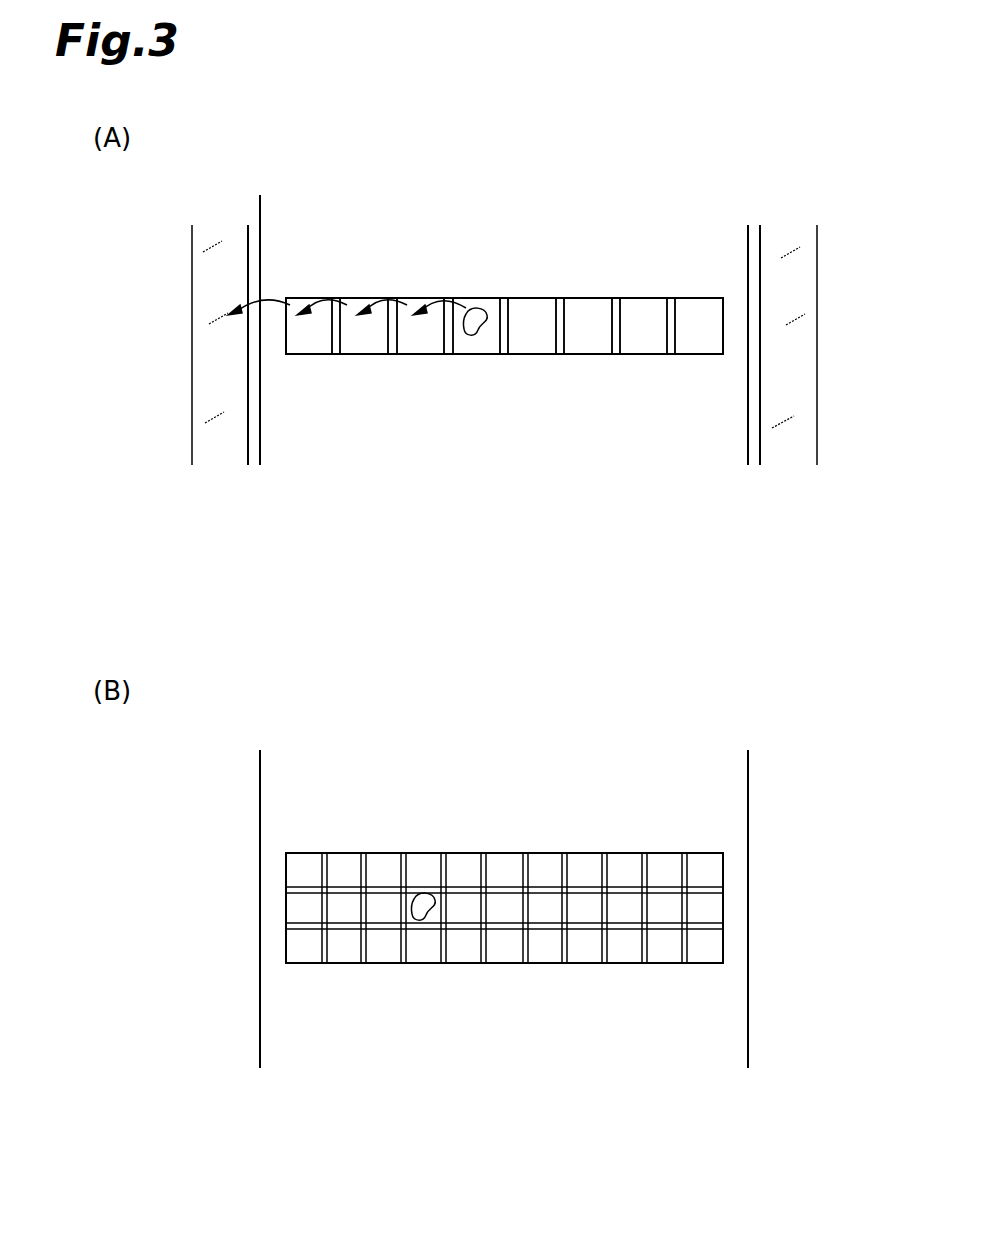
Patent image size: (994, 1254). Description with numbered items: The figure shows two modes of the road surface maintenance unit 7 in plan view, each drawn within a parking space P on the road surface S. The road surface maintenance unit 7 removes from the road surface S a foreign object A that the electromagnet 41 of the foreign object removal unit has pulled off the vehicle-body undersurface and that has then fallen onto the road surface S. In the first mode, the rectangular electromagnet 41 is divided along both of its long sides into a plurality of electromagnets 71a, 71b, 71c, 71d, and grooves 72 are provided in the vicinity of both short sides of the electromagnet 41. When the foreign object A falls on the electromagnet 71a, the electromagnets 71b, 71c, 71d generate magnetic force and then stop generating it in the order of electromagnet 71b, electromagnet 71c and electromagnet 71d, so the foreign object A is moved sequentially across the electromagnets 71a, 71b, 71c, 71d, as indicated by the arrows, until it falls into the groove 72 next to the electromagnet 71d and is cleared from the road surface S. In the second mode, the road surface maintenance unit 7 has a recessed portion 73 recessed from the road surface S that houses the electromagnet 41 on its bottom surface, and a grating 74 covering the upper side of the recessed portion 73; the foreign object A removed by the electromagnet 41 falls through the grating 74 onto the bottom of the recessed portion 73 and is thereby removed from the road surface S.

In FIG. 3A, the road surface maintenance unit 7 is at (507, 205).
In FIG. 3B, the road surface maintenance unit 7 is at (489, 765).
In FIG. 3A, the electromagnet 41 is at (714, 296).
In FIG. 3B, the electromagnet 41 is at (620, 865).
In FIG. 3A, the electromagnet 71a is at (478, 348).
In FIG. 3A, the electromagnet 71b is at (426, 348).
In FIG. 3A, the electromagnet 71c is at (370, 348).
In FIG. 3A, the electromagnet 71d is at (316, 348).
In FIG. 3A, the groove 72 is at (217, 458).
In FIG. 3B, the recessed portion 73 is at (540, 851).
In FIG. 3B, the grating 74 is at (542, 948).
In FIG. 3A, the foreign object A is at (472, 311).
In FIG. 3B, the foreign object A is at (420, 898).
In FIG. 3A, the parking space P is at (259, 210).
In FIG. 3B, the parking space P is at (259, 765).
In FIG. 3A, the road surface S is at (524, 537).
In FIG. 3B, the road surface S is at (524, 1115).